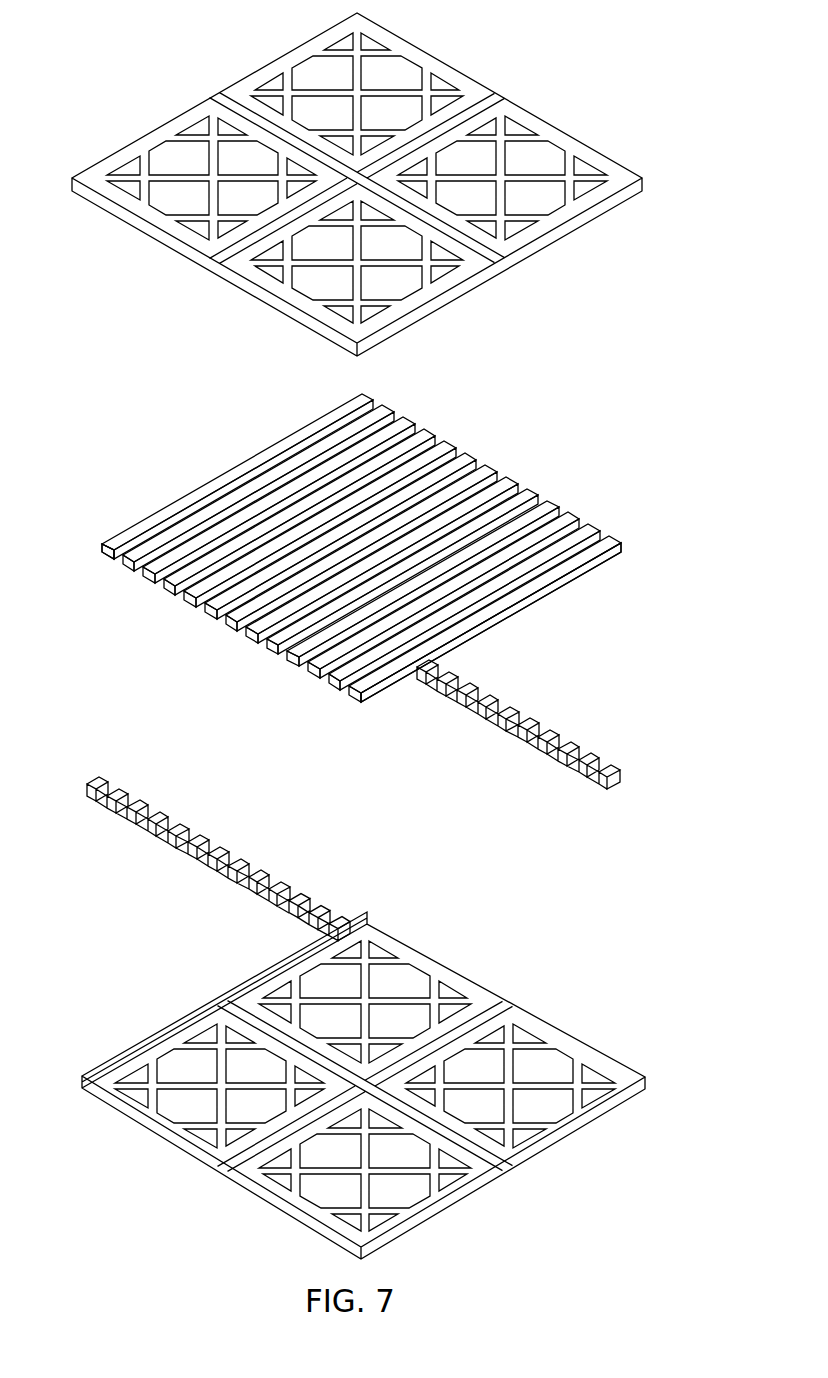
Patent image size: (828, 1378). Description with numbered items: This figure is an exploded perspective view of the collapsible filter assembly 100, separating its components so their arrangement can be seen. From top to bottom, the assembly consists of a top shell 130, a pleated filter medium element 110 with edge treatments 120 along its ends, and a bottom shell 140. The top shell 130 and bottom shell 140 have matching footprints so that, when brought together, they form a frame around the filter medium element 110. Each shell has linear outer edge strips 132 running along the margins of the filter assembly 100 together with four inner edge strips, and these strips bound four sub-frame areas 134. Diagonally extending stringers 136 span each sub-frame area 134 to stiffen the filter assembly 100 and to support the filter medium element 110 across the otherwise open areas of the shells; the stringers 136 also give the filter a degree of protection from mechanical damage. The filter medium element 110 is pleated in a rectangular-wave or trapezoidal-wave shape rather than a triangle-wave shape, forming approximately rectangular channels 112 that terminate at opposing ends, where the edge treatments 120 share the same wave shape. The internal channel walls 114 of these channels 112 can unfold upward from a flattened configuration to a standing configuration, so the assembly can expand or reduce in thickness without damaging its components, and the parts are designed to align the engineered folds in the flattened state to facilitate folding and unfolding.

The filter assembly 100 is at (146, 40).
The pleated filter medium element 110 is at (190, 440).
The channels 112 is at (186, 626).
The internal channel walls 114 is at (102, 556).
The edge treatments 120 is at (570, 708).
The top shell 130 is at (145, 124).
The outer edge strips 132 is at (283, 65).
The sub-frame areas 134 is at (201, 170).
The stringers 136 is at (400, 92).
The bottom shell 140 is at (130, 1008).